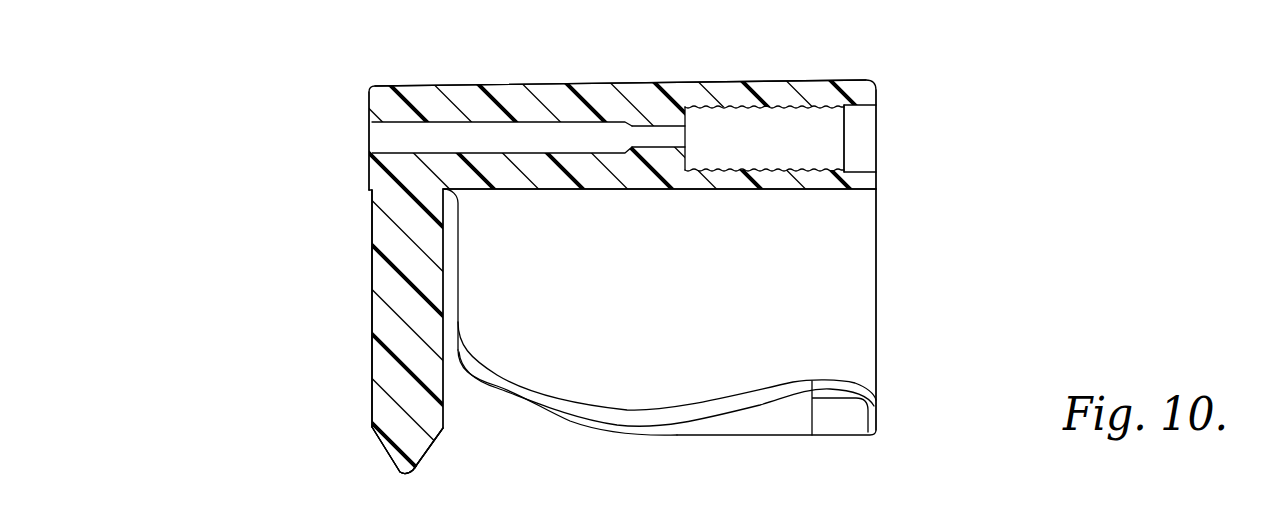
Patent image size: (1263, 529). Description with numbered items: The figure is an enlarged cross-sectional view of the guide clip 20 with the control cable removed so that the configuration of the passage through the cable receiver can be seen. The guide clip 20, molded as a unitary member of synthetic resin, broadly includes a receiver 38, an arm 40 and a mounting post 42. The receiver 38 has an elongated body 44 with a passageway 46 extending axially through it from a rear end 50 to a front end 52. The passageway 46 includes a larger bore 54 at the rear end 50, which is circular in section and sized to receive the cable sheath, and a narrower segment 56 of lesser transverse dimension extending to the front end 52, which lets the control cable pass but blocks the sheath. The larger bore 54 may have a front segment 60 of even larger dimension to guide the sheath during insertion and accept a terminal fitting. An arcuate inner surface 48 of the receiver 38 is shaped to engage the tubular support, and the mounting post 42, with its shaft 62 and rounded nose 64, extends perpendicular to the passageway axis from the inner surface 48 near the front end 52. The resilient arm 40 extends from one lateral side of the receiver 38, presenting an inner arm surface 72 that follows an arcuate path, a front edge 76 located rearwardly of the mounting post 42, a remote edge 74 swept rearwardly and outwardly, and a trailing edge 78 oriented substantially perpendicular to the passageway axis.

The guide clip 20 is at (892, 277).
The receiver 38 is at (772, 82).
The arm 40 is at (765, 427).
The mounting post 42 is at (372, 388).
The elongated body 44 is at (568, 83).
The passageway 46 is at (662, 137).
The inner surface 48 is at (480, 190).
The rear end 50 is at (876, 184).
The front end 52 is at (368, 173).
The larger bore 54 is at (830, 125).
The narrower segment 56 is at (457, 135).
The front segment 60 is at (866, 132).
The shaft 62 is at (388, 292).
The rounded nose 64 is at (398, 472).
The inner arm surface 72 is at (595, 368).
The remote edge 74 is at (645, 420).
The front edge 76 is at (460, 280).
The trailing edge 78 is at (876, 345).